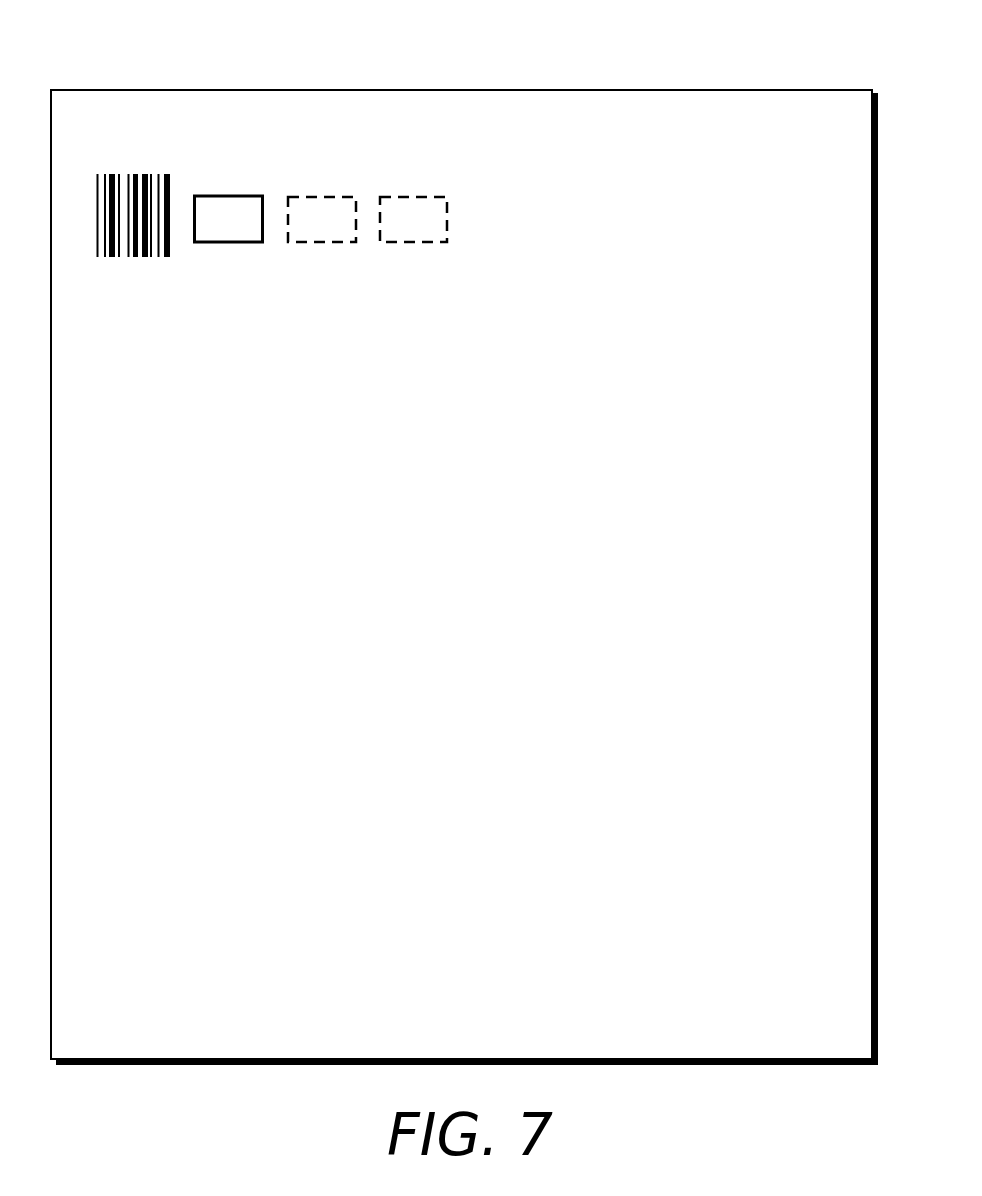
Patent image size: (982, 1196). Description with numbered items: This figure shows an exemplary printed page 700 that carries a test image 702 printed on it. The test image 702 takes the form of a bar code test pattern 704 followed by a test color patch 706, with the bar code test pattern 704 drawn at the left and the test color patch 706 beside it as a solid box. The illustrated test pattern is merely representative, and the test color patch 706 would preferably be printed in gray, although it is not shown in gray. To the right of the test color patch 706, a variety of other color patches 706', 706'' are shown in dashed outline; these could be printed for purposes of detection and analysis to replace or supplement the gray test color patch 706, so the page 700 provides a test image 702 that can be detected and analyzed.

The page 700 is at (722, 90).
The test image 702 is at (224, 267).
The bar code test pattern 704 is at (135, 175).
The test color patch 706 is at (243, 186).
The color patch 706' is at (322, 254).
The color patch 706'' is at (434, 254).